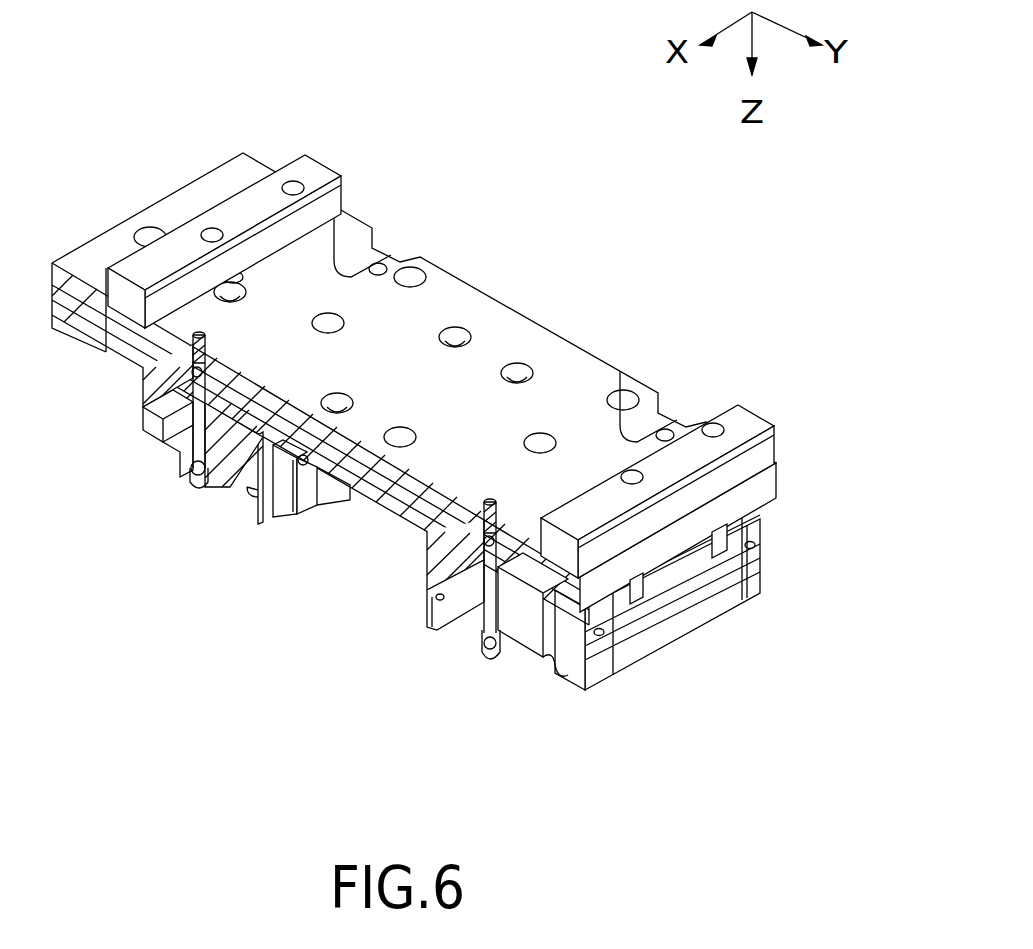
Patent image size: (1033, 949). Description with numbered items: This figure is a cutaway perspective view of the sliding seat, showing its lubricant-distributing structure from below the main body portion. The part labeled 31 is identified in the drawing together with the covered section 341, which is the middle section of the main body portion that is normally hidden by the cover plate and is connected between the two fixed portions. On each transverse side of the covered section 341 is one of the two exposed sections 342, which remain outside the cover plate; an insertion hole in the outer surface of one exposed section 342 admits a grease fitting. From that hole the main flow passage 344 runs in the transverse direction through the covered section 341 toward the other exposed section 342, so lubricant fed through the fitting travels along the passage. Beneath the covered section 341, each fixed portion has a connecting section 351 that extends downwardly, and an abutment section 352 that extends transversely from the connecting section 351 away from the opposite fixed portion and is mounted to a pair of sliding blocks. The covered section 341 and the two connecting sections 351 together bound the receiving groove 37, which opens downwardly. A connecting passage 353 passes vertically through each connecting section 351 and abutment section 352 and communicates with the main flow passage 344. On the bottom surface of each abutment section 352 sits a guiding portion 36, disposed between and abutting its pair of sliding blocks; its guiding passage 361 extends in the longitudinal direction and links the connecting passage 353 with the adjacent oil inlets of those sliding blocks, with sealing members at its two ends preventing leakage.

The platform plate 31 is at (414, 389).
The covered section 341 is at (414, 389).
The exposed sections 342 is at (245, 165).
The main flow passage 344 is at (412, 506).
The connecting section 351 is at (232, 448).
The abutment section 352 is at (162, 424).
The connecting passage 353 is at (198, 402).
The guiding portion 36 is at (197, 487).
The guiding passage 361 is at (195, 470).
The receiving groove 37 is at (330, 525).